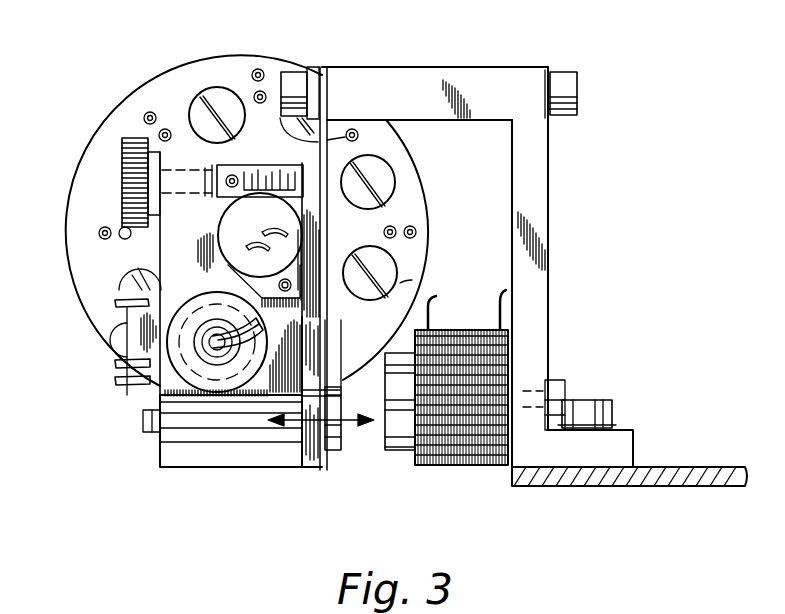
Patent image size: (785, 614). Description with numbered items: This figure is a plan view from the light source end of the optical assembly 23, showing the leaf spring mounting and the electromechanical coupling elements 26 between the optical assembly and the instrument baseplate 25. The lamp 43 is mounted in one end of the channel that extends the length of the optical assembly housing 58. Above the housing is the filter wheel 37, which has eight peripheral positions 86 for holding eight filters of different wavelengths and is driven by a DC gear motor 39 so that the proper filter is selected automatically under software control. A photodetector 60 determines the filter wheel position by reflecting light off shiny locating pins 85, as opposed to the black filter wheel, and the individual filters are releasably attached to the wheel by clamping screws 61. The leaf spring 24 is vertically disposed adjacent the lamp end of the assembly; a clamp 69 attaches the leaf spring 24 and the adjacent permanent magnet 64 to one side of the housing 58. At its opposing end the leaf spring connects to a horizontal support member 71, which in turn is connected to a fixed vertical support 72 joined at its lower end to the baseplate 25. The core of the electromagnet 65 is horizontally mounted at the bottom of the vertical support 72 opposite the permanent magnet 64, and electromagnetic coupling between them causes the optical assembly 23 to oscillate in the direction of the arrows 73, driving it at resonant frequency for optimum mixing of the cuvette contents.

The optical assembly 23 is at (197, 164).
The leaf spring 24 is at (330, 153).
The baseplate 25 is at (624, 487).
The electromechanical coupling elements 26 is at (345, 440).
The filter wheel 37 is at (172, 80).
The DC gear motor 39 is at (227, 230).
The lamp 43 is at (176, 368).
The optical assembly housing 58 is at (187, 470).
The photodetector 60 is at (138, 320).
The clamping screws 61 is at (124, 228).
The permanent magnet 64 is at (332, 452).
The electromagnet 65 is at (463, 468).
The clamp 69 is at (412, 275).
The horizontal support member 71 is at (432, 66).
The fixed vertical support 72 is at (549, 201).
The arrows 73 is at (297, 425).
The locating pins 85 is at (99, 232).
The peripheral positions 86 is at (213, 93).